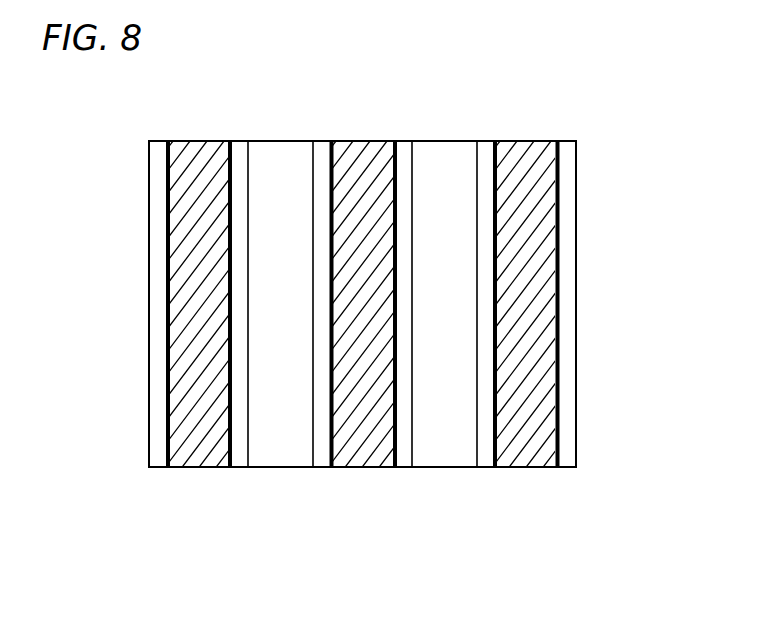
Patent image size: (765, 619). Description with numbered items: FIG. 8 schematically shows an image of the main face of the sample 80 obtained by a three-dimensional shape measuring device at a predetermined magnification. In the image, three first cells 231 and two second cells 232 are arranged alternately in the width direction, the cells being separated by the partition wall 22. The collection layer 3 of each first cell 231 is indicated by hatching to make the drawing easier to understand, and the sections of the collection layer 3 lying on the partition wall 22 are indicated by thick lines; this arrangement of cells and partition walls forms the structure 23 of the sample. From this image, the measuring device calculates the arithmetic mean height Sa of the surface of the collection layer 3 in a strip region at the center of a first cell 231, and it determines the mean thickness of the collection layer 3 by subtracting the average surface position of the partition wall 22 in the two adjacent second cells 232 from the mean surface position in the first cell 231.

The sample 80 is at (158, 105).
The layer stack 23 is at (427, 531).
The partition wall 22 is at (238, 172).
The collection layer 3 is at (365, 175).
The first cell 231 is at (207, 449).
The second cell 232 is at (291, 451).